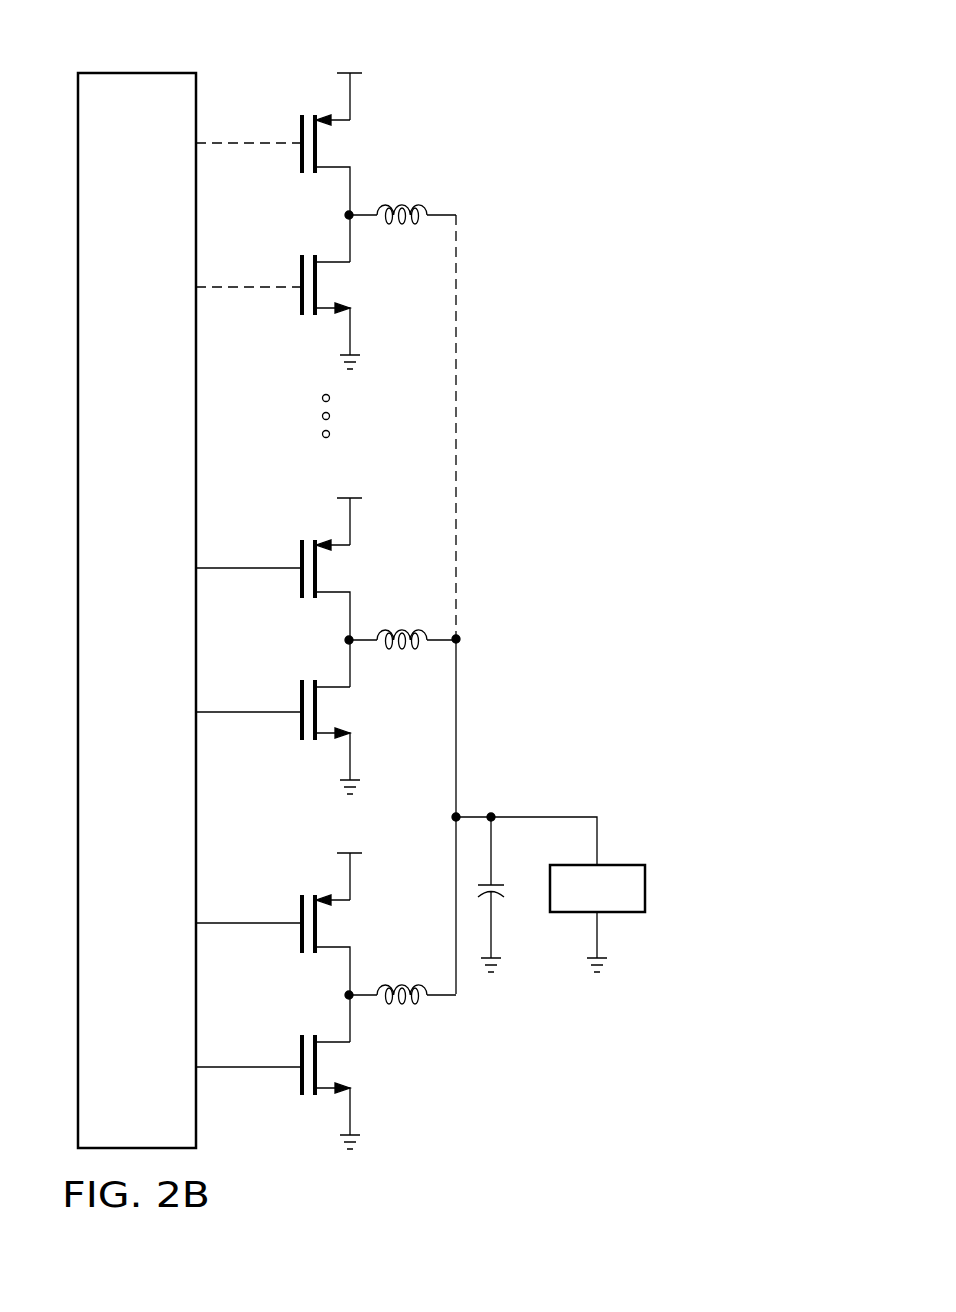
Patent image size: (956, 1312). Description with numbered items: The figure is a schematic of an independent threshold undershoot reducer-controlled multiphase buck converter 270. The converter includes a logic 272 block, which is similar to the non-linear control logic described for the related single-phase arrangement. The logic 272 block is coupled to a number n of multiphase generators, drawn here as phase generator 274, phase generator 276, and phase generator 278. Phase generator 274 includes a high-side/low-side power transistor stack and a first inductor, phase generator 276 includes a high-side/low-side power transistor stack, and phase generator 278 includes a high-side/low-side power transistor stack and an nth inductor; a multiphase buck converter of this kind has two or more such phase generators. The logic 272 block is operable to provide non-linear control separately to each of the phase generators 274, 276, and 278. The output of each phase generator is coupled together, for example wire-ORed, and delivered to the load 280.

The independent threshold undershoot reducer-controlled multiphase buck converter 270 is at (591, 172).
The logic block 272 is at (114, 645).
The phase generator 274 is at (326, 966).
The phase generator 276 is at (326, 611).
The phase generator 278 is at (285, 90).
The load 280 is at (621, 864).